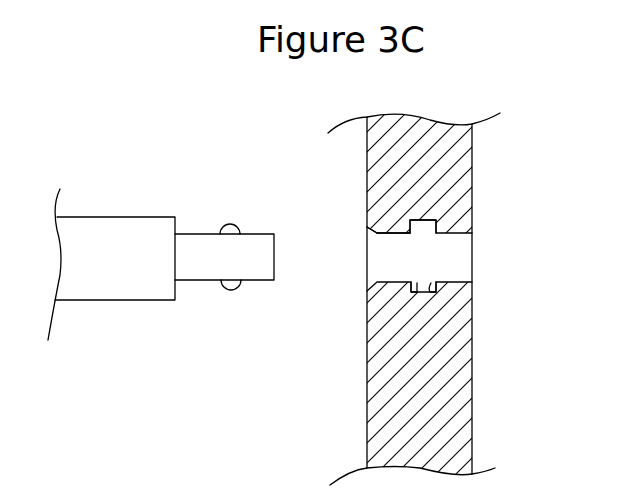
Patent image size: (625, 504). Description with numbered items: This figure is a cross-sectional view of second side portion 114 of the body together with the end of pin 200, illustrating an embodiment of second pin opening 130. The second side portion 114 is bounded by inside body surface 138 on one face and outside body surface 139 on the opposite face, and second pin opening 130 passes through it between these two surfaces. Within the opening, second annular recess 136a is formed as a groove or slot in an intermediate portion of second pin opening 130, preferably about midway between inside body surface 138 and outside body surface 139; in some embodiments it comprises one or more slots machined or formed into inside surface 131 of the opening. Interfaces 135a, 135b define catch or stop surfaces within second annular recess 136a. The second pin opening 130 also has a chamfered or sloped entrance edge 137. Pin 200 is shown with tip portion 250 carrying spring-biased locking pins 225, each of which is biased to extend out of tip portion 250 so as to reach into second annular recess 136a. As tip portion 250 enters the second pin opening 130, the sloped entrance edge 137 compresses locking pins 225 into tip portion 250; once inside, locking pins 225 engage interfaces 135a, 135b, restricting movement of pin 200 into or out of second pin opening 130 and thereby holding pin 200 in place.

The second side portion 114 is at (312, 300).
The second pin opening 130 is at (370, 274).
The inside surface of second opening 131 is at (392, 237).
The interface 135a is at (414, 293).
The interface 135b is at (437, 292).
The second annular recess 136a is at (422, 224).
The chamfered entrance edge 137 is at (376, 232).
The inside body surface 138 is at (367, 147).
The outside body surface 139 is at (472, 152).
The pin 200 is at (73, 216).
The spring-biased locking pin 225 is at (225, 222).
The tip portion 250 is at (256, 258).